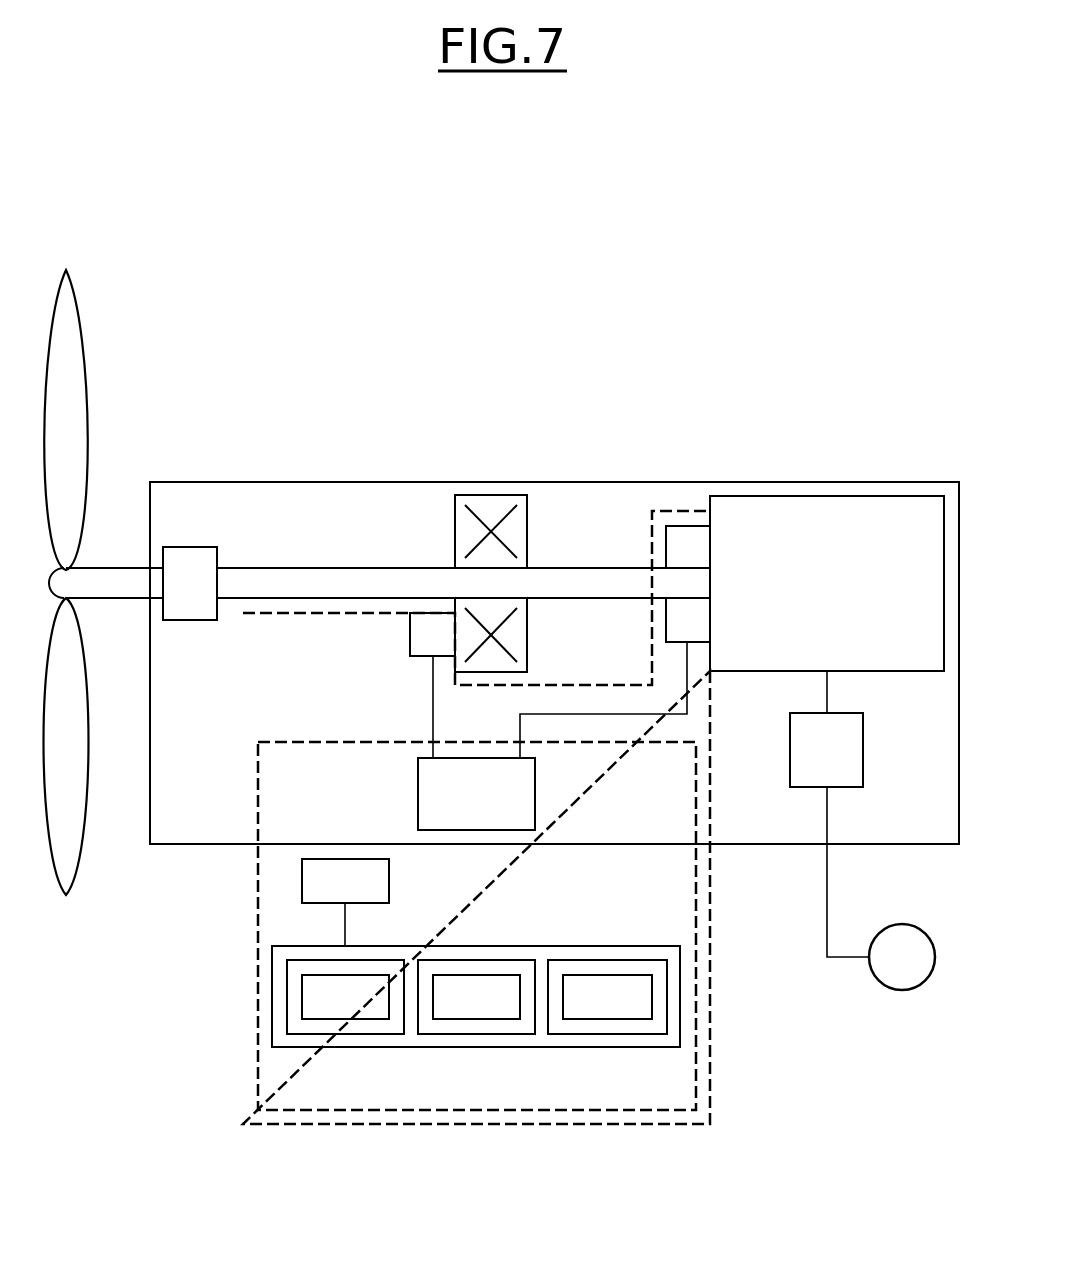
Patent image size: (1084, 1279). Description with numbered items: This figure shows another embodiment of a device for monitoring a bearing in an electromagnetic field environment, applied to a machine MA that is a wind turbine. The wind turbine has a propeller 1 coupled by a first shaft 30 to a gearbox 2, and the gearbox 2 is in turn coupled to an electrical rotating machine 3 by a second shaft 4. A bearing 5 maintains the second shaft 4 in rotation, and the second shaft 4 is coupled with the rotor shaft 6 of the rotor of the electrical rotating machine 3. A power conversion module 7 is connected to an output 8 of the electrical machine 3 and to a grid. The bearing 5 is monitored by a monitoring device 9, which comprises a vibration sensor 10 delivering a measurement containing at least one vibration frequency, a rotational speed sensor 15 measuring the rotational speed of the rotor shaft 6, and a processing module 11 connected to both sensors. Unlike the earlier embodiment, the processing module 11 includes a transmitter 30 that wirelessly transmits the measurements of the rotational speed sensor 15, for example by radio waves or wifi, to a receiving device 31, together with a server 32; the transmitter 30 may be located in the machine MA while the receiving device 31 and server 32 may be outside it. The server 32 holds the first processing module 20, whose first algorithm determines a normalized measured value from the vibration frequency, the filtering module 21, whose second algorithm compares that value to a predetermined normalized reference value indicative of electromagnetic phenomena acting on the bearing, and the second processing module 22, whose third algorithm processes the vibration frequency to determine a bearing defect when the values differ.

The machine MA is at (226, 362).
The propeller 1 is at (92, 413).
The gearbox 2 is at (191, 630).
The electrical rotating machine 3 is at (828, 487).
The second shaft 4 is at (373, 560).
The bearing 5 is at (491, 486).
The rotor shaft 6 is at (556, 560).
The power conversion module 7 is at (872, 750).
The output 8 is at (829, 676).
The monitoring device 9 is at (718, 881).
The vibration sensor 10 is at (432, 685).
The processing module 11 is at (706, 990).
The rotational speed sensor 15 is at (687, 516).
The first processing module 20 is at (344, 1044).
The filtering module 21 is at (476, 1044).
The second processing module 22 is at (605, 1044).
The transmitter 30 is at (119, 560).
The receiving device 31 is at (345, 902).
The server 32 is at (262, 993).